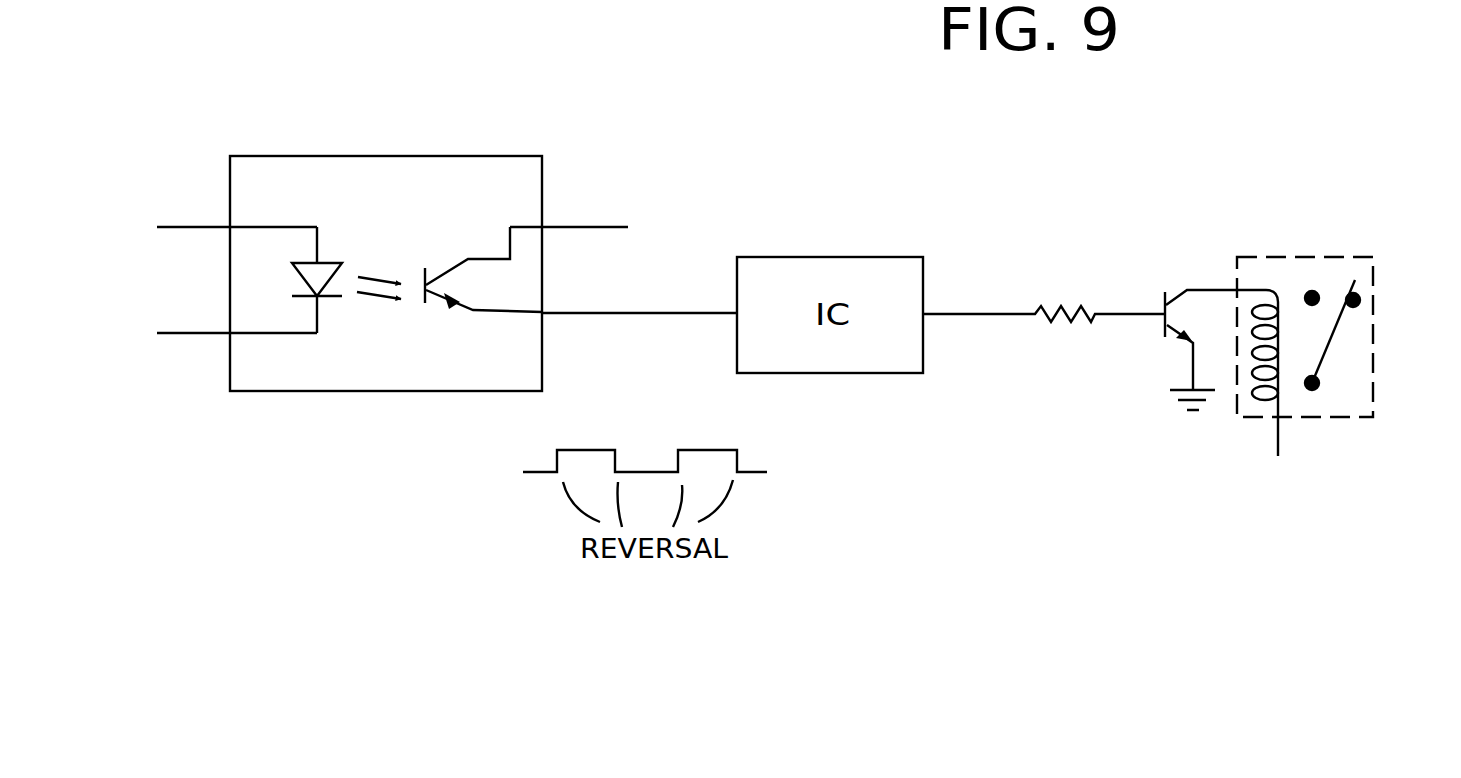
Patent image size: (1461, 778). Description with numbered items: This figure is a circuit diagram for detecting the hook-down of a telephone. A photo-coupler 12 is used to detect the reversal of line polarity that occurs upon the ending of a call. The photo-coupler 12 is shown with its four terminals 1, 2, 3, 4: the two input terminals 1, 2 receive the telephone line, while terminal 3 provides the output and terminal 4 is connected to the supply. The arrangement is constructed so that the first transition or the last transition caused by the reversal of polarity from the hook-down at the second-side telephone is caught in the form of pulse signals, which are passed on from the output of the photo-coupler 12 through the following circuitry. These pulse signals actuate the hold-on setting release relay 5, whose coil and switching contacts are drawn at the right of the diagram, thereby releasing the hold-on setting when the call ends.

The photo-coupler input terminal 1 (L1) 1 is at (210, 221).
The photo-coupler input terminal 2 (L2) 2 is at (212, 325).
The photo-coupler output terminal 3 is at (639, 298).
The photo-coupler supply terminal 4 (VDD) 4 is at (603, 219).
The hold-on setting release relay 5 is at (1380, 294).
The photo-coupler 12 is at (398, 162).